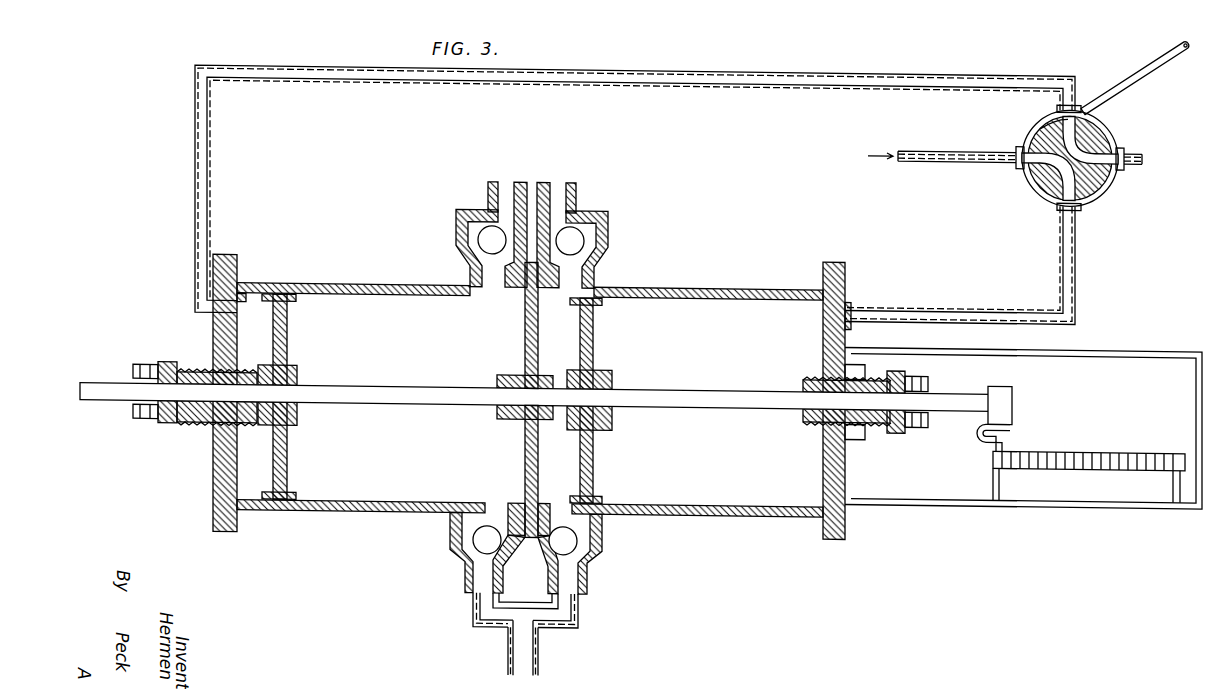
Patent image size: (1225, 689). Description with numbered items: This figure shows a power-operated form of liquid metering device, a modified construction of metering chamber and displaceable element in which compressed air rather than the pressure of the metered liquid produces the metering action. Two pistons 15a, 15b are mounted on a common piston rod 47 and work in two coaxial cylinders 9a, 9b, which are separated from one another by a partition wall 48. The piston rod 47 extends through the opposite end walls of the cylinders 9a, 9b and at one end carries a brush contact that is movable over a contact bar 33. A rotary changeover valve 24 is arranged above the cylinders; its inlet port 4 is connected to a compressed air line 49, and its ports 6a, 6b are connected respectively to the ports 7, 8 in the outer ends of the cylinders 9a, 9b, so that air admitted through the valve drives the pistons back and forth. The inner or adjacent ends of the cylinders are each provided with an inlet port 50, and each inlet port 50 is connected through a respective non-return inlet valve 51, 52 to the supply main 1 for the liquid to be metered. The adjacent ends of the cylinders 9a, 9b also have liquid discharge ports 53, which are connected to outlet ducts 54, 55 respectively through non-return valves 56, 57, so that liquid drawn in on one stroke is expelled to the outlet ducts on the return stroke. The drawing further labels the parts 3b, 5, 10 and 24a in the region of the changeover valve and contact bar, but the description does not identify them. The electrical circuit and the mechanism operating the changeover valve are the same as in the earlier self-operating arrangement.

The supply main 1 is at (539, 656).
The spring connector 3b is at (1010, 445).
The inlet port 4 is at (1022, 162).
The outlet port 5 is at (1130, 150).
The port 6a is at (1078, 100).
The port 6b is at (1060, 200).
The port 7 is at (244, 306).
The port 8 is at (820, 311).
The cylinder 9a is at (396, 362).
The cylinder 9b is at (732, 360).
The valve housing 10 is at (1106, 188).
The piston 15a is at (287, 338).
The piston 15b is at (594, 341).
The rotary changeover valve 24 is at (1114, 176).
The valve passage 24a is at (1045, 130).
The contact bar 33 is at (1100, 453).
The piston rod 47 is at (740, 406).
The partition wall 48 is at (525, 456).
The compressed air line 49 is at (942, 144).
The inlet port 50 is at (494, 515).
The non-return inlet valve 51 is at (480, 541).
The non-return inlet valve 52 is at (570, 546).
The liquid discharge port 53 is at (495, 292).
The outlet duct 54 is at (505, 182).
The outlet duct 55 is at (572, 182).
The non-return valve 56 is at (488, 242).
The non-return valve 57 is at (576, 242).